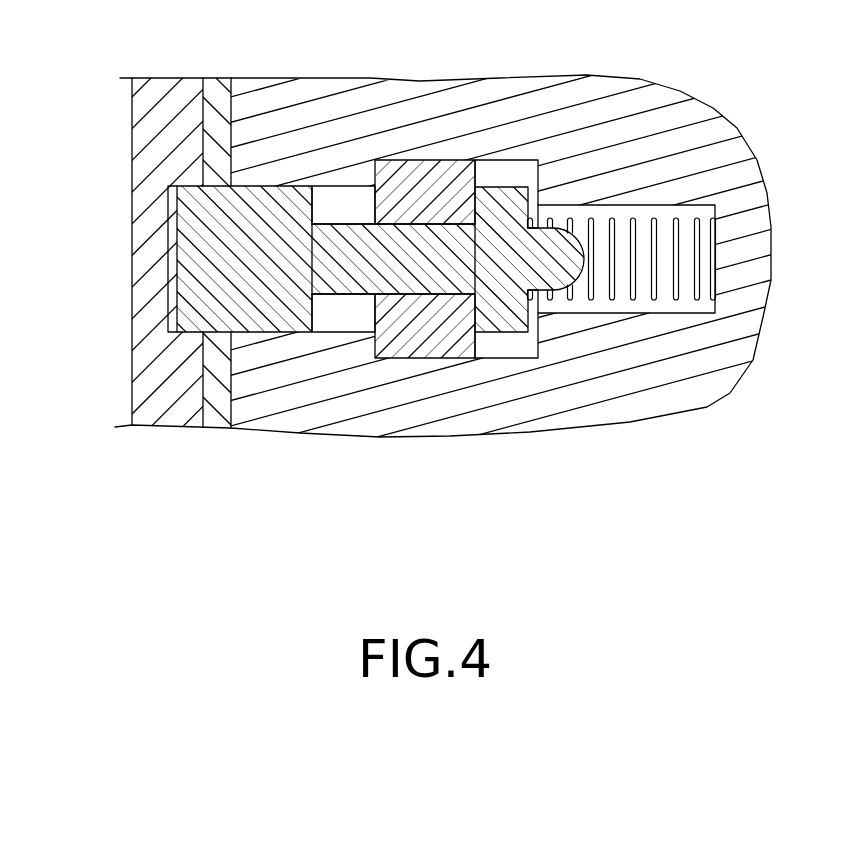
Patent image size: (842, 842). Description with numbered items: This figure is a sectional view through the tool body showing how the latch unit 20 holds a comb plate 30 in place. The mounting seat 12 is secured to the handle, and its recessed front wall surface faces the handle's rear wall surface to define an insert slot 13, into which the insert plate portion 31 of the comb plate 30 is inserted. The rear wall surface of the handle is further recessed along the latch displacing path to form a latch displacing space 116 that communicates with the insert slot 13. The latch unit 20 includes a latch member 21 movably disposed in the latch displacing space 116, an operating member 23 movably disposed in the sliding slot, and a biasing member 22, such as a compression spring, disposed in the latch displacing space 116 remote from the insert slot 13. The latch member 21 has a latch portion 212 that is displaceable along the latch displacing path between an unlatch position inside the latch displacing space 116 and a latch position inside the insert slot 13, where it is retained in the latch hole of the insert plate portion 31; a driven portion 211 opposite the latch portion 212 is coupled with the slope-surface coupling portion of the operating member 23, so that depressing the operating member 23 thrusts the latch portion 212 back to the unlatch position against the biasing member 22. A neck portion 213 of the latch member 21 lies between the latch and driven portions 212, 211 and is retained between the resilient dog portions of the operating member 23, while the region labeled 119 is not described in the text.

The mounting seat 12 is at (143, 387).
The insert slot 13 is at (231, 386).
The latch unit 20 is at (348, 193).
The latch member 21 is at (263, 228).
The driven portion 211 is at (518, 193).
The latch portion 212 is at (193, 198).
The neck portion 213 is at (355, 253).
The biasing member 22 is at (678, 223).
The operating member 23 is at (442, 183).
The comb plate 30 is at (218, 403).
The insert plate portion 31 is at (221, 458).
The latch displacing space 116 is at (343, 325).
The spring chamber 119 is at (642, 313).